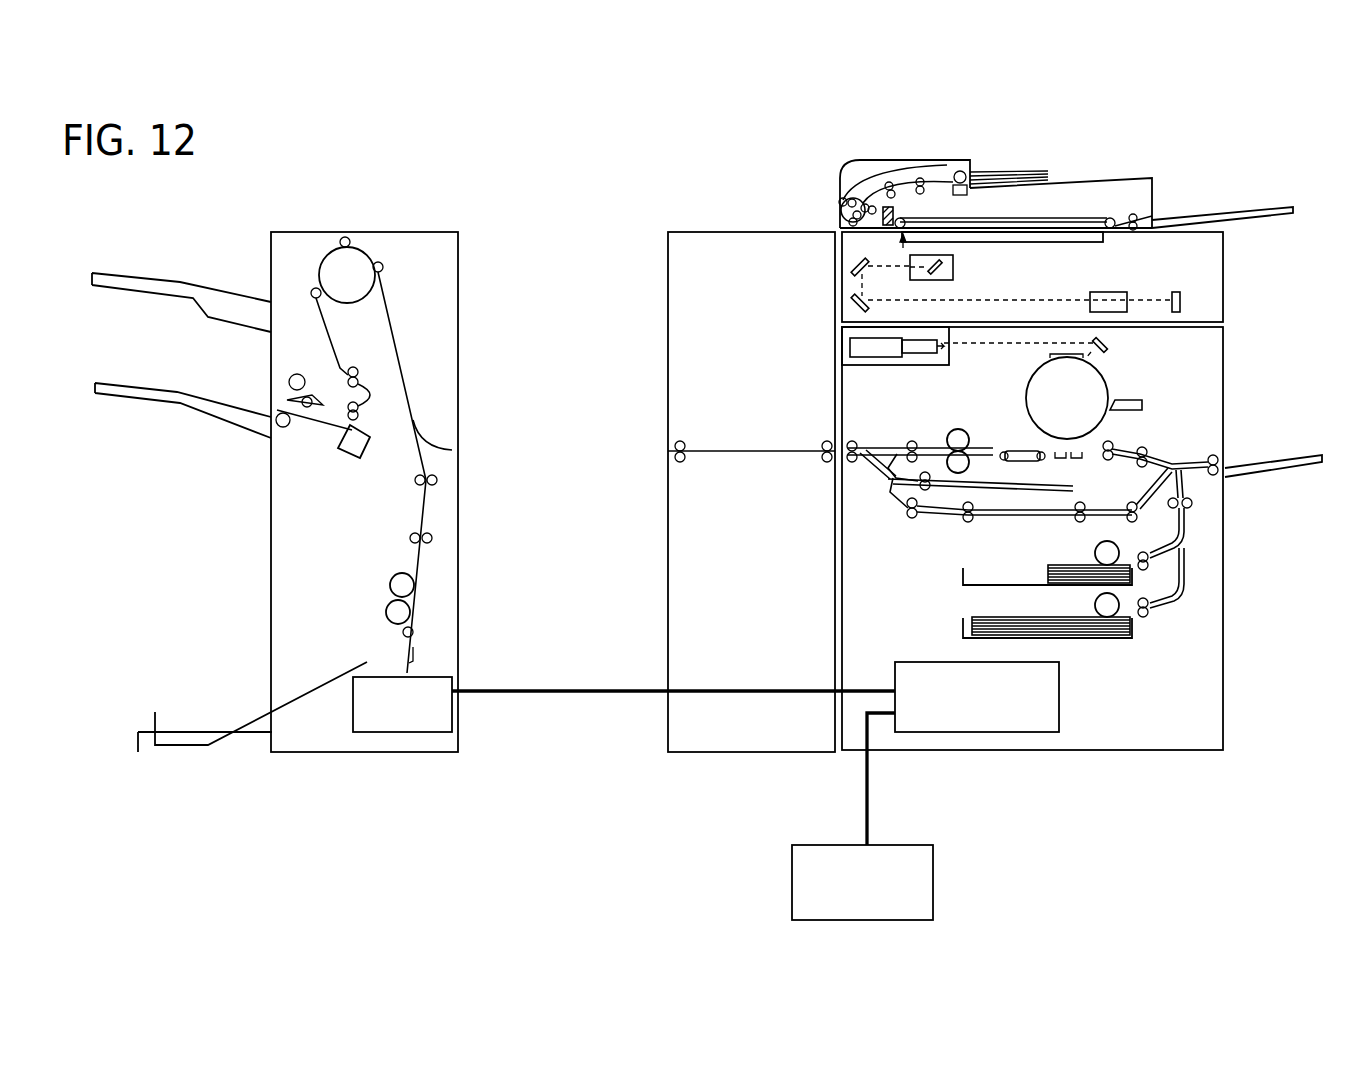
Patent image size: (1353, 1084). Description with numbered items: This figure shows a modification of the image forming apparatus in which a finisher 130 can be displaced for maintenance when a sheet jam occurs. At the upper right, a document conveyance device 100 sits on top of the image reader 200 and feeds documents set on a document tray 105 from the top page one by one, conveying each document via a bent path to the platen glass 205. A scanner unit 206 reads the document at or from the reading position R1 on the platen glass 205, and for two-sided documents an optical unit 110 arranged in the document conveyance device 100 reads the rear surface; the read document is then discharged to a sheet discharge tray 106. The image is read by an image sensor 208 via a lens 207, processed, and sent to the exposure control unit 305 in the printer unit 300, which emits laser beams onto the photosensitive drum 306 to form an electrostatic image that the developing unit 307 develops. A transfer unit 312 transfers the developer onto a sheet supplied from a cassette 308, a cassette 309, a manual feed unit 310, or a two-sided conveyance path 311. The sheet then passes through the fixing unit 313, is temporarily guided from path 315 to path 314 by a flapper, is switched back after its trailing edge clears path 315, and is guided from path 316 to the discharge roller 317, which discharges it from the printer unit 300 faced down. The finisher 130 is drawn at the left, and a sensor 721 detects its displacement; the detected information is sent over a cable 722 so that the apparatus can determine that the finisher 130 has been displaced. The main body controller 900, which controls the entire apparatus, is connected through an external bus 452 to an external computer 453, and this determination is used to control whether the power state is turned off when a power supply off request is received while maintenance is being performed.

The document conveyance device 100 is at (939, 158).
The document tray 105 is at (1090, 185).
The sheet discharge tray 106 is at (1268, 208).
The optical unit 110 is at (896, 210).
The reading position R1 is at (888, 250).
The image reader 200 is at (1223, 284).
The platen glass 205 is at (1105, 242).
The scanner unit 206 is at (953, 267).
The lens 207 is at (1100, 292).
The image sensor 208 is at (1177, 292).
The printer unit 300 is at (1223, 673).
The exposure control unit 305 is at (877, 367).
The photosensitive drum 306 is at (1026, 397).
The developing unit 307 is at (1134, 397).
The cassette 308 is at (962, 577).
The cassette 309 is at (962, 628).
The manual feed unit 310 is at (1290, 460).
The two-sided conveyance path 311 is at (927, 516).
The transfer unit 312 is at (1073, 483).
The fixing unit 313 is at (967, 436).
The path 314 is at (1012, 516).
The path 315 is at (900, 452).
The path 316 is at (867, 478).
The discharge roller 317 is at (878, 447).
The finisher 130 is at (270, 578).
The sensor 721 is at (405, 735).
The cable 722 is at (560, 695).
The external bus 452 is at (866, 794).
The external computer 453 is at (913, 845).
The main body controller 900 is at (1061, 692).